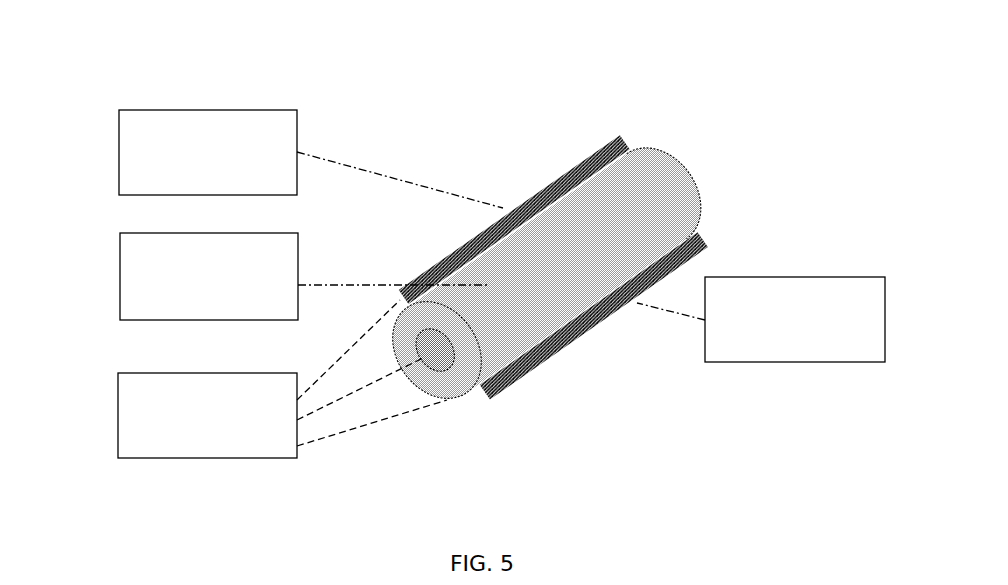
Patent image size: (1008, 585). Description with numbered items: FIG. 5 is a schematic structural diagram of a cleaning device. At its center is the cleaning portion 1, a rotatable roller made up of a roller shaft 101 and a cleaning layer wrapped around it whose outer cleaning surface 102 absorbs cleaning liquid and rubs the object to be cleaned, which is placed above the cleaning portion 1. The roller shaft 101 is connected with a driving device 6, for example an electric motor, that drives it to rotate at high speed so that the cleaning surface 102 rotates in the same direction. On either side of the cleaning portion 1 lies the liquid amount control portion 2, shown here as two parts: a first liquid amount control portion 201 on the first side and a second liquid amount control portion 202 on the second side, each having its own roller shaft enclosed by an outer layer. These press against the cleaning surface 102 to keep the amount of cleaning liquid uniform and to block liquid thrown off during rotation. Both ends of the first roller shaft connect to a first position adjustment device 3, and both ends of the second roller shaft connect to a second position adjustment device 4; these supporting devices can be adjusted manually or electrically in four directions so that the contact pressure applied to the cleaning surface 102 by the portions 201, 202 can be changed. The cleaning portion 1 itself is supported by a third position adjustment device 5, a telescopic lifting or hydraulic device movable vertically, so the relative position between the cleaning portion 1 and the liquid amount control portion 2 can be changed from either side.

The cleaning portion 1 is at (546, 317).
The roller shaft 101 is at (435, 349).
The cleaning surface 102 is at (546, 273).
The liquid amount control portion 2 is at (613, 234).
The first liquid amount control portion 201 is at (514, 219).
The second liquid amount control portion 202 is at (594, 315).
The first position adjustment device 3 is at (119, 158).
The second position adjustment device 4 is at (768, 362).
The third position adjustment device 5 is at (120, 277).
The driving device 6 is at (118, 422).